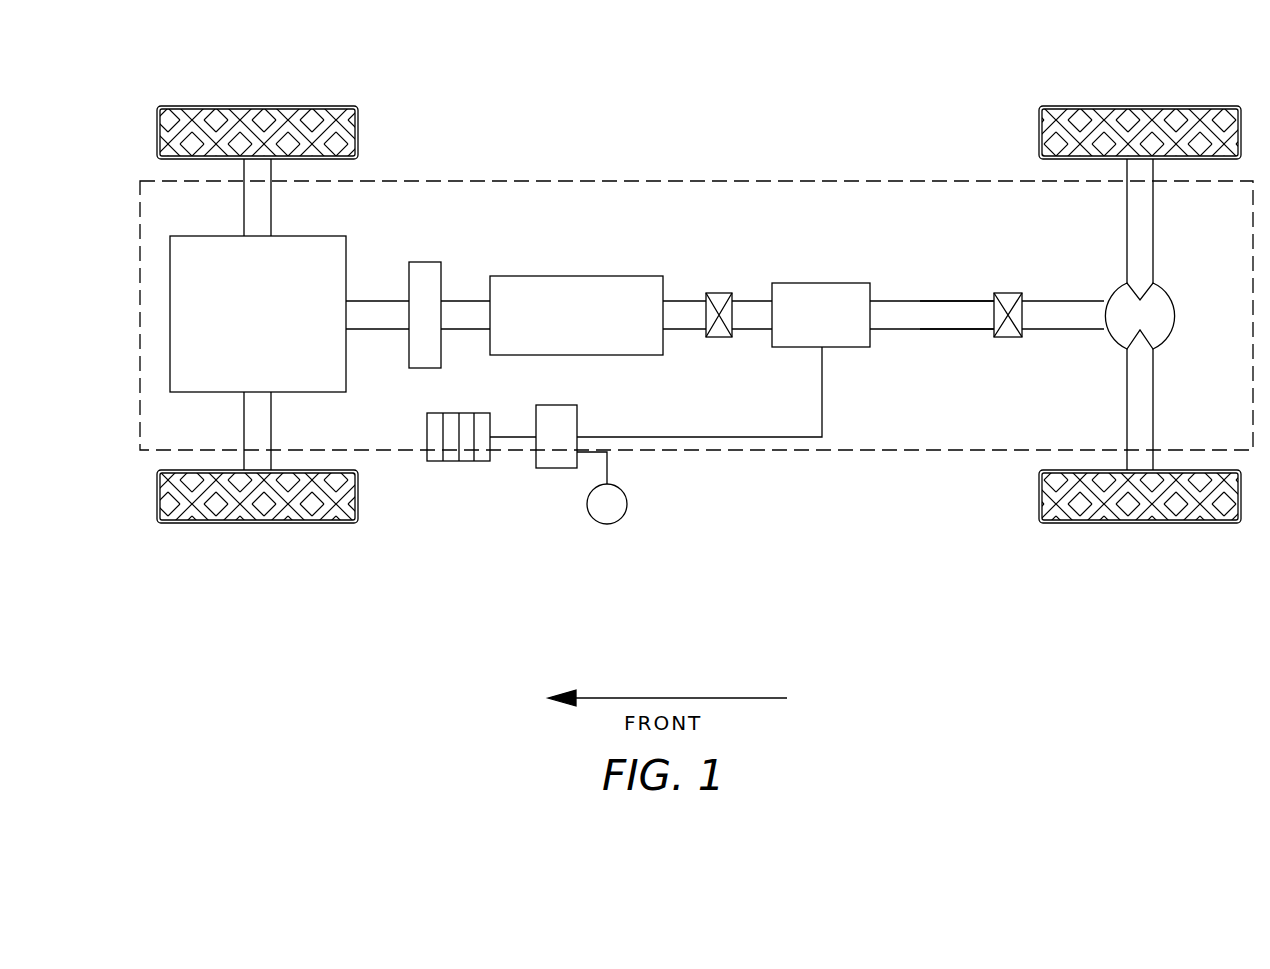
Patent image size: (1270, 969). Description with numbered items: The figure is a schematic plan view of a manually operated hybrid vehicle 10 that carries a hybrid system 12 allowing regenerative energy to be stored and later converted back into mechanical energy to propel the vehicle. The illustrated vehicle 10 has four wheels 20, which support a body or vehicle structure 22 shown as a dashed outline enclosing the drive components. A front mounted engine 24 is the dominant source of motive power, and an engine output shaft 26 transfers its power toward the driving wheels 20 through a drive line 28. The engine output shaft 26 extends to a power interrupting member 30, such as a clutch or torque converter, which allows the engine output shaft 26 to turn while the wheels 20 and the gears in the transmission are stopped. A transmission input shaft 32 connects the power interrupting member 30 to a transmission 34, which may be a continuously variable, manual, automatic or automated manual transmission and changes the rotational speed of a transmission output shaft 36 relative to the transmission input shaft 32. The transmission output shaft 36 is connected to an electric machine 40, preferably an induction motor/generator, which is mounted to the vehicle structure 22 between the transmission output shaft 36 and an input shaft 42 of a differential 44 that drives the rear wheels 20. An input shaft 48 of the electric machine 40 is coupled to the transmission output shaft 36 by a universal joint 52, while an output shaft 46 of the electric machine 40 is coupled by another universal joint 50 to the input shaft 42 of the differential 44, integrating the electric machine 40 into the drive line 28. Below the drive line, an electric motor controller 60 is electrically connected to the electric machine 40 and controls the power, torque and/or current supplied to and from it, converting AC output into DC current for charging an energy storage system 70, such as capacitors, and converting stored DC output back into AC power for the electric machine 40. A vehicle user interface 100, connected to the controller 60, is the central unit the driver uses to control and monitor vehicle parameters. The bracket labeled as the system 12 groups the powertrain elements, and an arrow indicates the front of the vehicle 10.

The vehicle 10 is at (312, 573).
The hybrid system 12 is at (868, 610).
The wheels 20 is at (293, 112).
The vehicle structure 22 is at (645, 180).
The engine 24 is at (270, 324).
The engine output shaft 26 is at (389, 332).
The drive line 28 is at (955, 334).
The power interrupting member 30 is at (423, 261).
The transmission input shaft 32 is at (462, 300).
The transmission 34 is at (591, 325).
The transmission output shaft 36 is at (688, 334).
The electric machine 40 is at (837, 326).
The input shaft of the differential 42 is at (1062, 334).
The differential 44 is at (1172, 300).
The output shaft of the electric machine 46 is at (921, 334).
The input shaft of the electric machine 48 is at (755, 334).
The universal joint 50 is at (1010, 292).
The universal joint 52 is at (718, 292).
The electric motor controller 60 is at (562, 470).
The energy storage system 70 is at (466, 462).
The vehicle user interface 100 is at (612, 526).